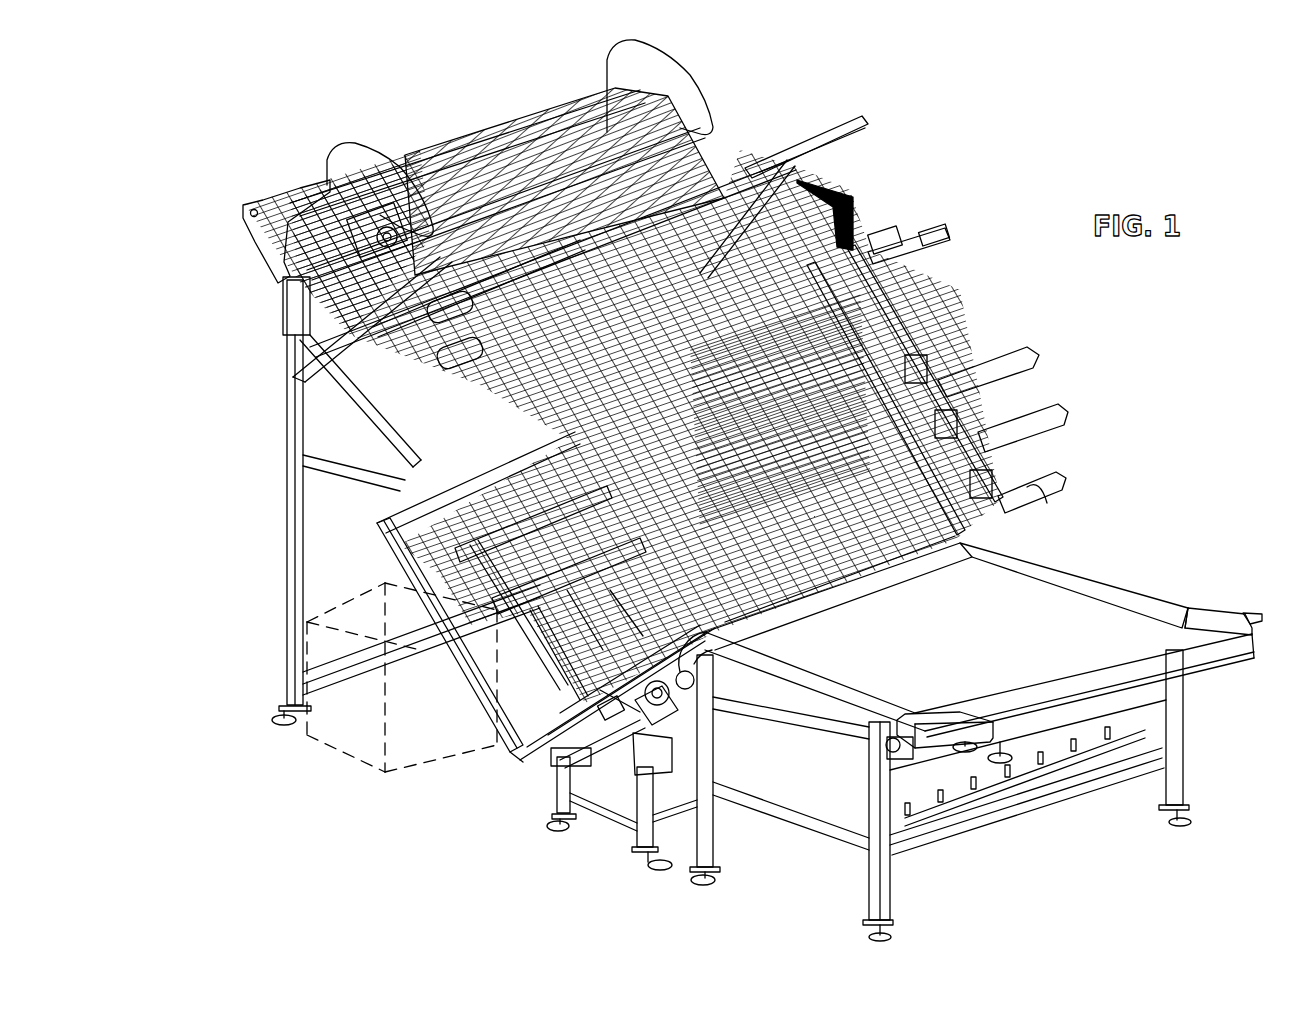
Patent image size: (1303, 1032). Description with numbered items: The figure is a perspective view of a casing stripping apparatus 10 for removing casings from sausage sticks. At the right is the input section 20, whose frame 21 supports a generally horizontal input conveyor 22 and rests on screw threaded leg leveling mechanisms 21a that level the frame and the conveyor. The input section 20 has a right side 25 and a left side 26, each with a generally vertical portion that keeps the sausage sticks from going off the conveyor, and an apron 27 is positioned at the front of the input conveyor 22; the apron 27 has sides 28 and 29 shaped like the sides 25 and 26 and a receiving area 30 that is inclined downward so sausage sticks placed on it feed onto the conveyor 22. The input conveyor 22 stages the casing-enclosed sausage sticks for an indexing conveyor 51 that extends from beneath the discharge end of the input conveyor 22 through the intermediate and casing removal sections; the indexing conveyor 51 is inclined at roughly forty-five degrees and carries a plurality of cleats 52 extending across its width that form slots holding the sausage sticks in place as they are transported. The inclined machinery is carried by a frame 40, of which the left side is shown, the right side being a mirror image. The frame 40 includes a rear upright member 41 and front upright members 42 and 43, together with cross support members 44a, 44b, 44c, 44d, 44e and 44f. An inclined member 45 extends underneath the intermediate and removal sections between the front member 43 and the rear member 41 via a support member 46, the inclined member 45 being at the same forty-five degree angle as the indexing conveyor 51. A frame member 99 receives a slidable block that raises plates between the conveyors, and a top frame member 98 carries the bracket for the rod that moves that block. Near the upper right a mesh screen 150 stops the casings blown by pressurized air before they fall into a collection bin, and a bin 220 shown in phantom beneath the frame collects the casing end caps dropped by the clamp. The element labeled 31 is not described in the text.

The casing stripping apparatus 10 is at (1018, 137).
The input section 20 is at (981, 719).
The frame 21 is at (842, 803).
The screw threaded leg leveling mechanisms 21a is at (1190, 816).
The input conveyor 22 is at (977, 646).
The right side 25 is at (1074, 584).
The left side 26 is at (852, 698).
The apron 27 is at (1233, 606).
The side 28 is at (1190, 606).
The side 29 is at (980, 720).
The receiving area 30 is at (1210, 650).
The side rail 31 is at (912, 556).
The frame 40 is at (372, 501).
The rear upright member 41 is at (288, 498).
The front upright member 42 is at (560, 776).
The front upright member 43 is at (645, 782).
The cross support member 44a is at (682, 810).
The cross support member 44b is at (681, 743).
The cross support member 44c is at (603, 728).
The cross support member 44d is at (453, 510).
The cross support member 44e is at (372, 319).
The cross support member 44f is at (362, 222).
The inclined member 45 is at (424, 350).
The support member 46 is at (302, 276).
The indexing conveyor 51 is at (702, 149).
The cleats 52 is at (487, 173).
The top frame member 98 is at (750, 654).
The frame member 99 is at (565, 716).
The mesh screen 150 is at (838, 196).
The bin 220 is at (380, 592).